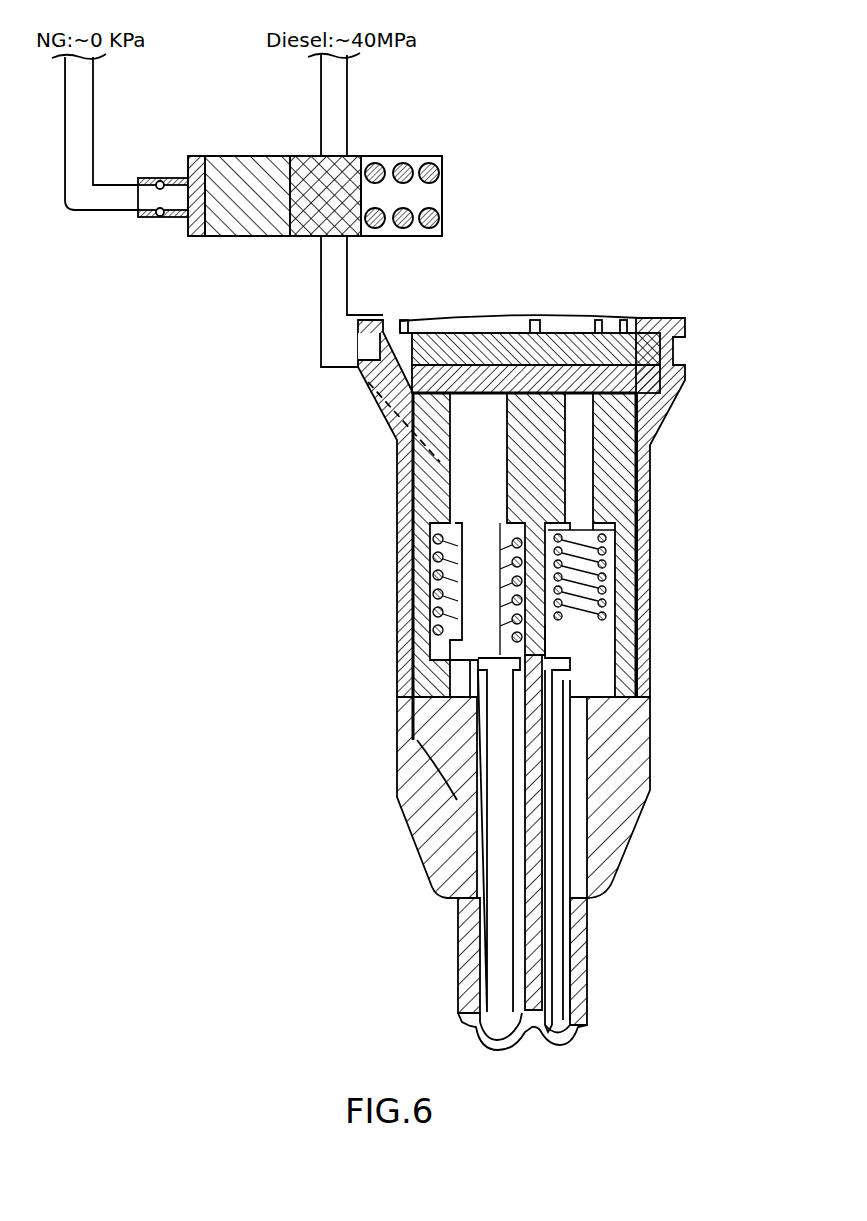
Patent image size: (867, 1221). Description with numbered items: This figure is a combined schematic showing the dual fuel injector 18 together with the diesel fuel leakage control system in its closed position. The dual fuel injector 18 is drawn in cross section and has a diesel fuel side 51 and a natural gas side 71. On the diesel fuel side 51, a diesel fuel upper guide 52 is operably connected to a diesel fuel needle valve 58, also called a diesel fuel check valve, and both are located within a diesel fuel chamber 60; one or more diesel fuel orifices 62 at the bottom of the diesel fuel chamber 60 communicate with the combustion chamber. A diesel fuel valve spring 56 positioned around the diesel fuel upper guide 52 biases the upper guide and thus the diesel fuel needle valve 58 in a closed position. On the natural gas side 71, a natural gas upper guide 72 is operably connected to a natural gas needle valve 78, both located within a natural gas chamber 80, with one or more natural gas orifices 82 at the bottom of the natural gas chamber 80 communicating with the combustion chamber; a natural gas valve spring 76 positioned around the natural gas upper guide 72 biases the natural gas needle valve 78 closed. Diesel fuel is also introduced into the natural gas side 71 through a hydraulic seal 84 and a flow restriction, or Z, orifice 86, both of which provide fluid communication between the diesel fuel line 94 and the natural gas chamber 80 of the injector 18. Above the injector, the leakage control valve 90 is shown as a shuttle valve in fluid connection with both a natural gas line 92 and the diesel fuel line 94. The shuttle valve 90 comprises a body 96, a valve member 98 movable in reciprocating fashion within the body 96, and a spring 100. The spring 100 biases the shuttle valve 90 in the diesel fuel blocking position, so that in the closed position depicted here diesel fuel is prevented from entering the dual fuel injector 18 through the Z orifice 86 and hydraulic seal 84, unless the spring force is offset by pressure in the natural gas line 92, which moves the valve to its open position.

The dual fuel injector 18 is at (700, 322).
The diesel fuel side 51 is at (650, 722).
The diesel fuel upper guide 52 is at (580, 465).
The diesel fuel valve spring 56 is at (603, 575).
The diesel fuel needle valve 58 is at (557, 910).
The diesel fuel chamber 60 is at (610, 540).
The diesel fuel orifices 62 is at (558, 1028).
The natural gas side 71 is at (397, 722).
The natural gas upper guide 72 is at (468, 482).
The natural gas valve spring 76 is at (440, 574).
The natural gas needle valve 78 is at (495, 830).
The natural gas chamber 80 is at (445, 672).
The natural gas orifices 82 is at (478, 1032).
The hydraulic seal 84 is at (368, 382).
The Z orifice 86 is at (386, 320).
The leakage control valve 90 is at (364, 179).
The natural gas line 92 is at (93, 143).
The diesel fuel line 94 is at (321, 104).
The body 96 is at (450, 172).
The valve member 98 is at (244, 180).
The spring 100 is at (436, 216).